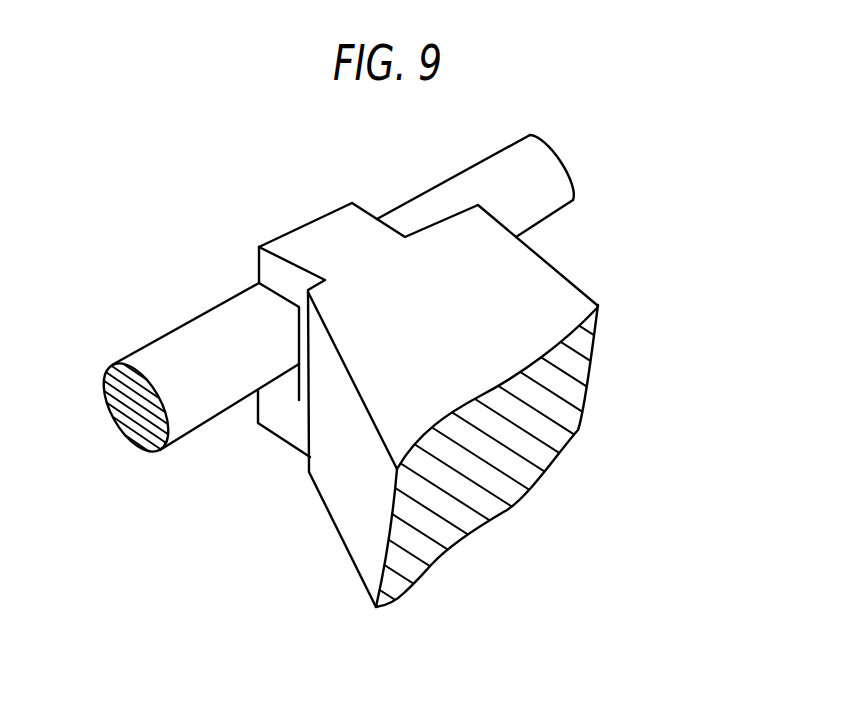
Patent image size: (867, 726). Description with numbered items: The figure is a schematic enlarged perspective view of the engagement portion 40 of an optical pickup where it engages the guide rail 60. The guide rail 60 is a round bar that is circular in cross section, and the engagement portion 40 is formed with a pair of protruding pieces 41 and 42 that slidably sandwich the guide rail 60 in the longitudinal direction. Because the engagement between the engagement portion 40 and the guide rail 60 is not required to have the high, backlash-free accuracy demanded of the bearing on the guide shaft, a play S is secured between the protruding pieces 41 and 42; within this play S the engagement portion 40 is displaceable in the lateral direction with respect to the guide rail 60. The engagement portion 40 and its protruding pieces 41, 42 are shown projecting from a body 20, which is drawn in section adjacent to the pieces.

The housing body (sectioned) 20 is at (582, 287).
The engagement portion 40 is at (242, 178).
The protruding piece 41 is at (268, 274).
The protruding piece 42 is at (271, 407).
The guide rail 60 is at (163, 336).
The play S is at (293, 385).